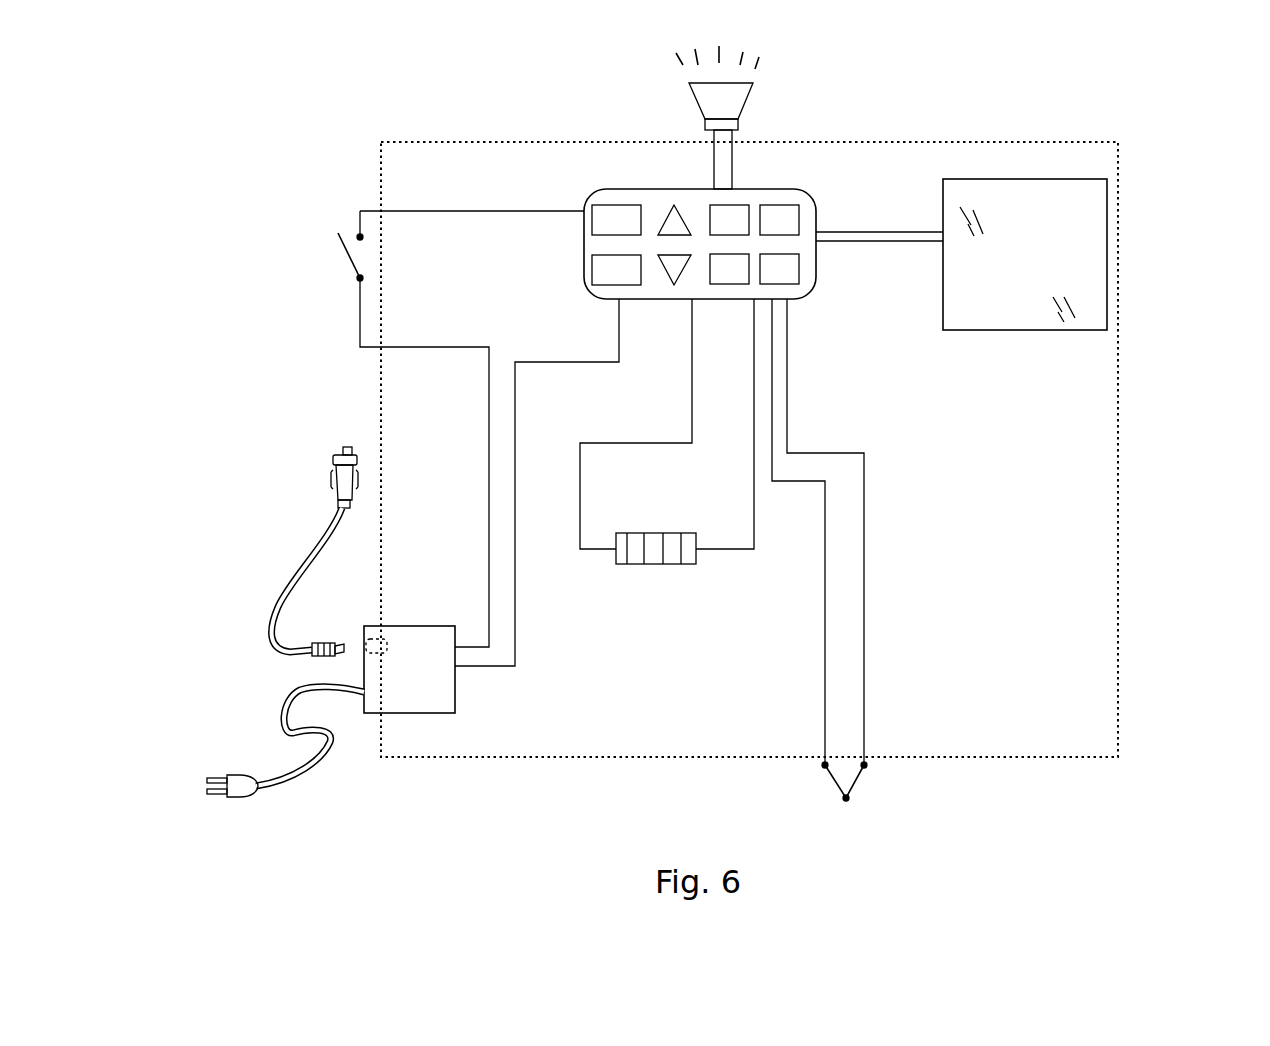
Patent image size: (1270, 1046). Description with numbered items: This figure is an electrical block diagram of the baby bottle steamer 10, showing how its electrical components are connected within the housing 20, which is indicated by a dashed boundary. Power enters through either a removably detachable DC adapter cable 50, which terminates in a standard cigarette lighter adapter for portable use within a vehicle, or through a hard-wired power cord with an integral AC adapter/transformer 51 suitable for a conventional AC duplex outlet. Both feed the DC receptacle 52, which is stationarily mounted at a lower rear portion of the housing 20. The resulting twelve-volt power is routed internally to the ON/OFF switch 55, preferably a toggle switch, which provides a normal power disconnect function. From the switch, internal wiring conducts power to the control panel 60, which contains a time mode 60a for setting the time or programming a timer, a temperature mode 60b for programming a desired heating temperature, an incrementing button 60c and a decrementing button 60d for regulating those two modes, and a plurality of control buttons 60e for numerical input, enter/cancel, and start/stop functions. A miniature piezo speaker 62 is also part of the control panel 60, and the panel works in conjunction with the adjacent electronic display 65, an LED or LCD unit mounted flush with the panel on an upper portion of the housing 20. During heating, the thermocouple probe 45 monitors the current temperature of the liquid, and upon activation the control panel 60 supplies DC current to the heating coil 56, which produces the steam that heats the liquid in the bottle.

The baby bottle steamer 10 is at (305, 122).
The housing 20 is at (378, 440).
The thermocouple probe 45 is at (857, 782).
The DC adapter cable 50 is at (307, 567).
The AC adapter/transformer 51 is at (340, 695).
The DC receptacle 52 is at (432, 713).
The ON/OFF switch 55 is at (353, 265).
The heating coil 56 is at (635, 565).
The control panel 60 is at (780, 190).
The time mode 60a is at (615, 205).
The temperature mode 60b is at (595, 252).
The incrementing button 60c is at (663, 217).
The decrementing button 60d is at (683, 260).
The control buttons 60e is at (785, 267).
The miniature piezo speaker 62 is at (726, 99).
The electronic display 65 is at (1107, 252).